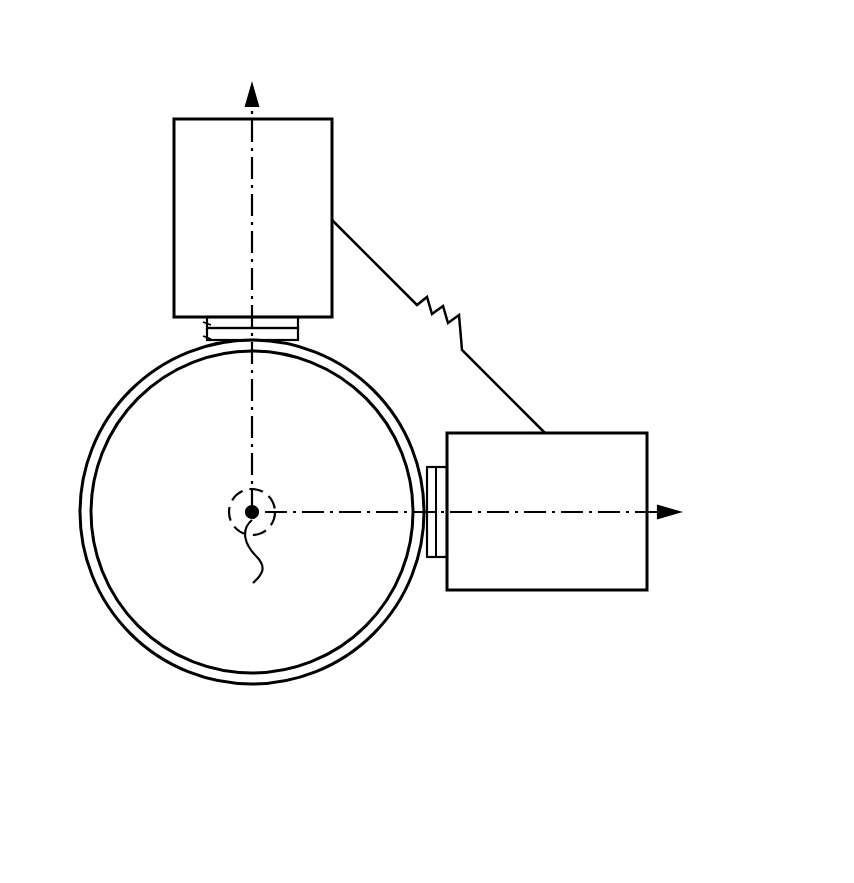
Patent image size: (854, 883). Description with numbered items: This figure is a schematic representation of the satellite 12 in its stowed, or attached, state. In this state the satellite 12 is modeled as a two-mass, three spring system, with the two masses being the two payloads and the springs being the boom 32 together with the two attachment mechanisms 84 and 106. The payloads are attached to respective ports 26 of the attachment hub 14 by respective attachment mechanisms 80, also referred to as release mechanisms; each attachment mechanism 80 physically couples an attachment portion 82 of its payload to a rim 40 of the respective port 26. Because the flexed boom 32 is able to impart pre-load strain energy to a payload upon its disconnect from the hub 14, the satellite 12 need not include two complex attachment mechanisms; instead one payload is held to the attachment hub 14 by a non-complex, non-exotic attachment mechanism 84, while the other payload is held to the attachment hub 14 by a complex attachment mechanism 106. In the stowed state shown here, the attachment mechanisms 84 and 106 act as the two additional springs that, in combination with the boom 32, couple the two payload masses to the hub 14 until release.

The satellite 12 is at (497, 230).
The attachment hub 14 is at (118, 400).
The port 26 is at (227, 362).
The boom 32 is at (477, 359).
The rim 40 is at (298, 340).
The attachment mechanism 80 is at (332, 153).
The attachment portion 82 is at (207, 323).
The non-complex attachment mechanism 84 is at (207, 338).
The complex attachment mechanism 106 is at (423, 560).